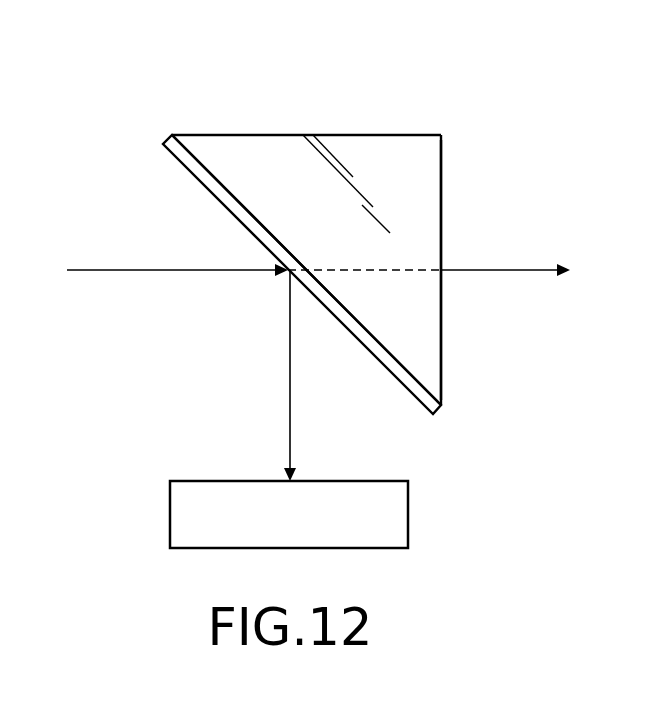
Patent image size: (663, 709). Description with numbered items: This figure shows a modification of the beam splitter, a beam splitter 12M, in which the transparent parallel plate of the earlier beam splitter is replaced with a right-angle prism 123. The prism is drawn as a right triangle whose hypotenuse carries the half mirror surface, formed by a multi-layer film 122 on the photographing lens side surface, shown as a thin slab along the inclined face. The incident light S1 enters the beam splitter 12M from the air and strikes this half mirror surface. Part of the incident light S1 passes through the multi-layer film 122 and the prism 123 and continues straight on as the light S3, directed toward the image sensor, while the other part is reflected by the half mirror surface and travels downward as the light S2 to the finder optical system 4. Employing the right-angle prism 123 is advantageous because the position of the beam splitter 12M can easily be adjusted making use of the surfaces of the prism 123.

The beam splitter 12M is at (396, 116).
The right-angle prism 123 is at (425, 188).
The multi-layer film 122 is at (248, 62).
The incident light S1 is at (113, 270).
The reflected light S2 is at (290, 416).
The transmitted light S3 is at (505, 272).
The finder optical system 4 is at (408, 517).